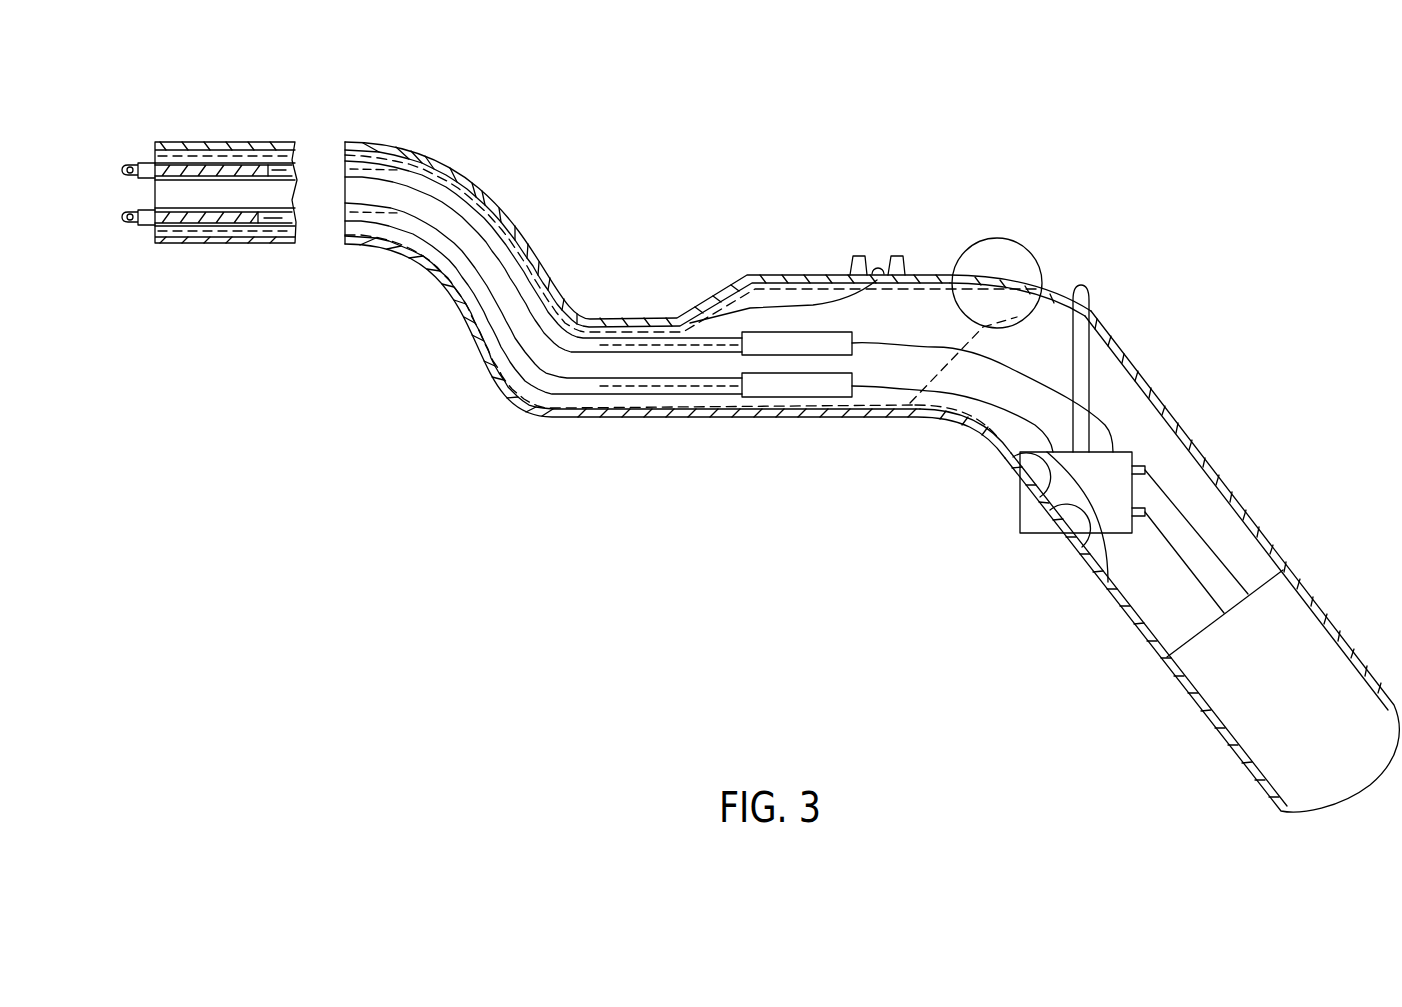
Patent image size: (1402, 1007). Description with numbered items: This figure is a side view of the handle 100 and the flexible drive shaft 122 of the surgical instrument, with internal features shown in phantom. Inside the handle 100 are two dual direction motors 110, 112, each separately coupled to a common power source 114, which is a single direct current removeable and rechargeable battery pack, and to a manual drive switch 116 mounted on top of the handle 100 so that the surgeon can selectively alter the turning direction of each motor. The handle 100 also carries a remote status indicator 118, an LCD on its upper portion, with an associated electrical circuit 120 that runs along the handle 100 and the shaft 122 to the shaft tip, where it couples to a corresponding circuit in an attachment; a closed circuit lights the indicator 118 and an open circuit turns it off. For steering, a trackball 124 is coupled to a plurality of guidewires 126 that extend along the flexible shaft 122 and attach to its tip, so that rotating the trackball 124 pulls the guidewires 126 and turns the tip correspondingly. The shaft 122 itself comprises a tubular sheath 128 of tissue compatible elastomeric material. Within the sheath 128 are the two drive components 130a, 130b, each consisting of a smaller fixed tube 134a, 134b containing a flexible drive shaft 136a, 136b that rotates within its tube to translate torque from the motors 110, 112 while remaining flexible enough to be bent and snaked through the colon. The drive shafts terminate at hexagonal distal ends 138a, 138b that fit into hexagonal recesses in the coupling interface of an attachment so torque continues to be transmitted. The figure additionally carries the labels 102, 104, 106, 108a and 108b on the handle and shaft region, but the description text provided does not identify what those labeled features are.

The handle 100 is at (765, 168).
The handle 102 is at (1172, 375).
The insertion tube 104 is at (530, 175).
The handle interior compartment 106 is at (1150, 593).
The actuation button 108a is at (1013, 475).
The actuation button 108b is at (1067, 528).
The motor 110 is at (790, 398).
The motor 112 is at (798, 332).
The power source 114 is at (1265, 717).
The manual drive switch 116 is at (1095, 287).
The remote status indicator 118 is at (882, 270).
The electrical circuit 120 is at (157, 143).
The flexible drive shaft 122 is at (545, 268).
The trackball 124 is at (1022, 254).
The guidewires 126 is at (928, 287).
The tubular sheath 128 is at (447, 160).
The drive component 130a is at (665, 385).
The drive component 130b is at (668, 338).
The fixed tube 134a is at (246, 237).
The fixed tube 134b is at (200, 164).
The flexible drive shaft 136a is at (248, 166).
The flexible drive shaft 136b is at (188, 224).
The distal end 138a is at (120, 168).
The distal end 138b is at (122, 222).